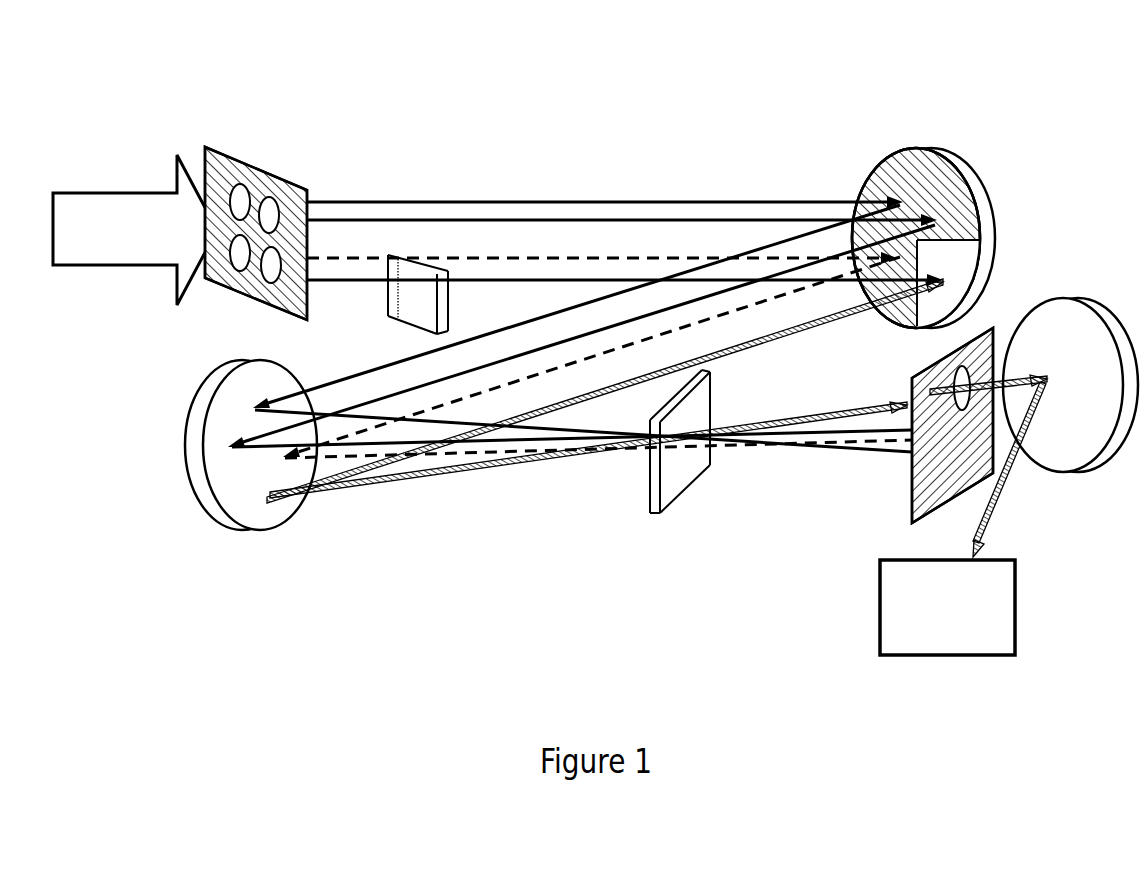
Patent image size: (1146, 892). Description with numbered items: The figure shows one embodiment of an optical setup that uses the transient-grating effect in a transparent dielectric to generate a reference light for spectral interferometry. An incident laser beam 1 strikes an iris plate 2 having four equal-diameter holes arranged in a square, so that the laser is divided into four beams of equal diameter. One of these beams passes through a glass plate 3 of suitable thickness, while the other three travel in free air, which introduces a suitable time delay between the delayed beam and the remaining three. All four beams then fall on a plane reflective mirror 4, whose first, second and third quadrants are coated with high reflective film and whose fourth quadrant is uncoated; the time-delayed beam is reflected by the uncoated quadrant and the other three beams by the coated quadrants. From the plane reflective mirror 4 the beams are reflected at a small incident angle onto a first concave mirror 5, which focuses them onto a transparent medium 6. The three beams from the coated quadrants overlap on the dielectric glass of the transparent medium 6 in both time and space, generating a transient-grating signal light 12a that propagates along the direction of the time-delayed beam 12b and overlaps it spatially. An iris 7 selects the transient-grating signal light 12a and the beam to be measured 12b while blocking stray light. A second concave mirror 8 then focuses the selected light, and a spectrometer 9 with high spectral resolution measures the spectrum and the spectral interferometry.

The incident laser beam 1 is at (88, 165).
The iris plate 2 is at (280, 165).
The glass plate 3 is at (367, 328).
The plane reflective mirror 4 is at (889, 139).
The first concave mirror 5 is at (170, 438).
The transparent medium 6 is at (627, 507).
The iris 7 is at (878, 495).
The second concave mirror 8 is at (1086, 277).
The spectrometer 9 is at (858, 622).
The transient-grating signal light 12a is at (700, 448).
The time delayed beam 12b is at (780, 420).